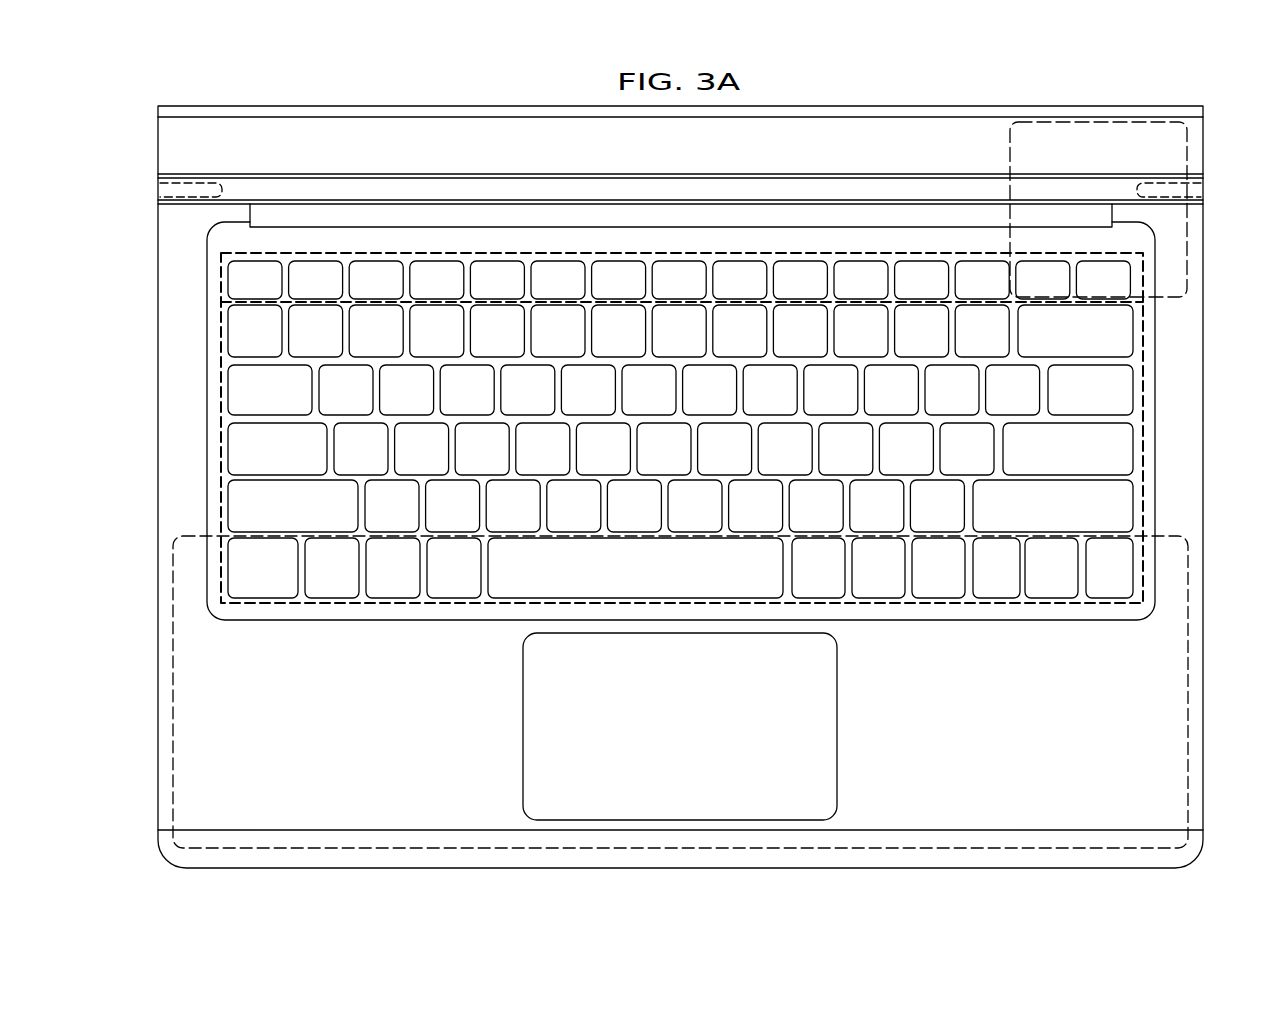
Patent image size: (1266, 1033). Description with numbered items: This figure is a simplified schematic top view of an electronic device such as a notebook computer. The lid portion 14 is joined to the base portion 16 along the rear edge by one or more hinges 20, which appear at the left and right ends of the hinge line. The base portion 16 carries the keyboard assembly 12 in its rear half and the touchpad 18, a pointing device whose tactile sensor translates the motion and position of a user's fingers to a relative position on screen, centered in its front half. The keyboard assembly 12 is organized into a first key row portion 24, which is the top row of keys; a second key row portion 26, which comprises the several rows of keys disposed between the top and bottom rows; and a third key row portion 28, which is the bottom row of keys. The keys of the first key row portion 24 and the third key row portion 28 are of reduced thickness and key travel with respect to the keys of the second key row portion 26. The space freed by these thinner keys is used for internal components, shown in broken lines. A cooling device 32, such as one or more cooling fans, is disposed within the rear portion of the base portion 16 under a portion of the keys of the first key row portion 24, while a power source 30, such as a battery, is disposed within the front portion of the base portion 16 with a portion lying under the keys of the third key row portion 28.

The keyboard assembly 12 is at (422, 603).
The lid portion 14 is at (530, 176).
The base portion 16 is at (157, 710).
The touchpad 18 is at (695, 741).
The hinges 20 is at (160, 190).
The first key row portion 24 is at (218, 269).
The second key row portion 26 is at (218, 378).
The third key row portion 28 is at (218, 570).
The power source 30 is at (1188, 716).
The cooling device 32 is at (1190, 155).